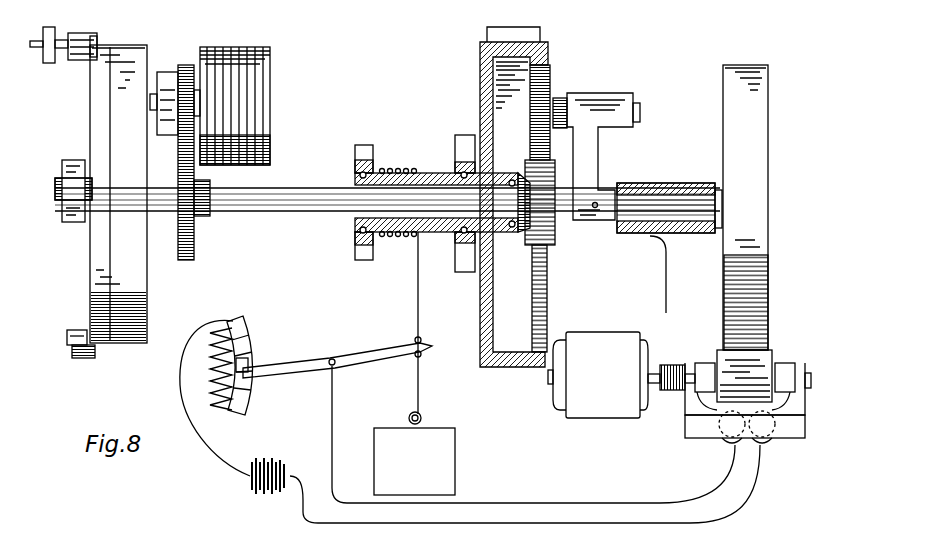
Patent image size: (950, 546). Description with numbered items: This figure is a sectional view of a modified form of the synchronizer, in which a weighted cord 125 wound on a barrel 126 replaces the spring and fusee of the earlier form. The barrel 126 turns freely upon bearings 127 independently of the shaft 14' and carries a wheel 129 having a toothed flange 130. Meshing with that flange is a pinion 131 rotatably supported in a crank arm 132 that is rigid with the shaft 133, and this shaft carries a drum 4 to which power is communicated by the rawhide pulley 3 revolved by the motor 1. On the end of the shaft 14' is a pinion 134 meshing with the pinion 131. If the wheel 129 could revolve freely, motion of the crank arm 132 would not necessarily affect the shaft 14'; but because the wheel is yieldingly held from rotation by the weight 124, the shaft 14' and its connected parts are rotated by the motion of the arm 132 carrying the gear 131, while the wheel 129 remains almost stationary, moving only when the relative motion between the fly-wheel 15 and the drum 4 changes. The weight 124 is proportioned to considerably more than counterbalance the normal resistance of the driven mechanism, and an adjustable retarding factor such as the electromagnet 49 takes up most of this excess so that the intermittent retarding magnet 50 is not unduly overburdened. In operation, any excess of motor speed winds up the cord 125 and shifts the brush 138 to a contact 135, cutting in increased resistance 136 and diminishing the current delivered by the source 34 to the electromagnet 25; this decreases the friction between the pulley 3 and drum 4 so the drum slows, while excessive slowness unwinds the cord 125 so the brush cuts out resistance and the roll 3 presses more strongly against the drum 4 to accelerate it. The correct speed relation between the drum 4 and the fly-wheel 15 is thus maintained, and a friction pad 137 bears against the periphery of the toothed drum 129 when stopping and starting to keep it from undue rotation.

The electromagnet 49 is at (77, 60).
The fly-wheel 15 is at (90, 312).
The intermittent retarding magnet 50 is at (77, 360).
The shaft 14' is at (387, 218).
The barrel 126 is at (430, 172).
The bearings 127 is at (355, 235).
The weighted cord 125 is at (415, 297).
The weight 124 is at (447, 460).
The resistance 136 is at (208, 378).
The brush 138 is at (250, 346).
The contact 135 is at (252, 396).
The source 34 is at (277, 462).
The wheel 129 is at (480, 76).
The friction pad 137 is at (541, 34).
The pinion 131 is at (551, 80).
The pinion 134 is at (553, 228).
The toothed flange 130 is at (542, 332).
The crank arm 132 is at (600, 153).
The shaft 133 is at (640, 233).
The drum 4 is at (755, 135).
The rawhide pulley 3 is at (760, 360).
The electromagnet 25 is at (735, 445).
The motor 1 is at (600, 406).